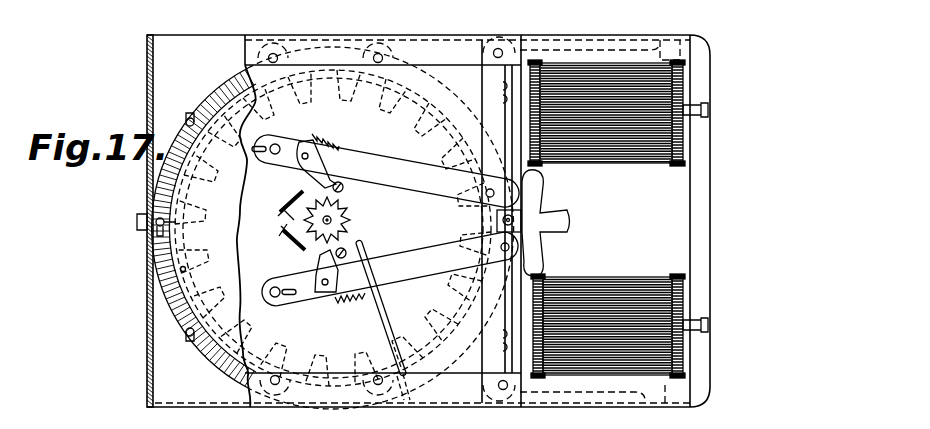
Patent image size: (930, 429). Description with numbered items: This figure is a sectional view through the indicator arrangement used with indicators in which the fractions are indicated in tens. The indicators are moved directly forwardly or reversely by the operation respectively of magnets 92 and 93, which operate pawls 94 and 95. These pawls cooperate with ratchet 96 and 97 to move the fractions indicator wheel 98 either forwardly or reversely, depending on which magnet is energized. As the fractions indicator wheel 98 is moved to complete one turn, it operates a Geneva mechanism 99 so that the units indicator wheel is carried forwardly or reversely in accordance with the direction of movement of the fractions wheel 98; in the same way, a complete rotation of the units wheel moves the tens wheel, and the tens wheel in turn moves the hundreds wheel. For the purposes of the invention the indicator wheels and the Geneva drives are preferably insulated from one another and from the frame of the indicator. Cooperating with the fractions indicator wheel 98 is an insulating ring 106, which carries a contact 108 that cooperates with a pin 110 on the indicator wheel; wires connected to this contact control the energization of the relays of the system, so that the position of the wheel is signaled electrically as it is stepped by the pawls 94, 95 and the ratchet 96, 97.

The magnet 92 is at (613, 162).
The magnet 93 is at (610, 277).
The pawl 94 is at (375, 164).
The pawl 95 is at (393, 260).
The ratchet 96 is at (337, 208).
The ratchet 97 is at (335, 227).
The fractions indicator wheel 98 is at (333, 228).
The Geneva mechanism 99 is at (562, 222).
The insulating ring 106 is at (173, 280).
The contact 108 is at (231, 236).
The pin 110 is at (180, 267).